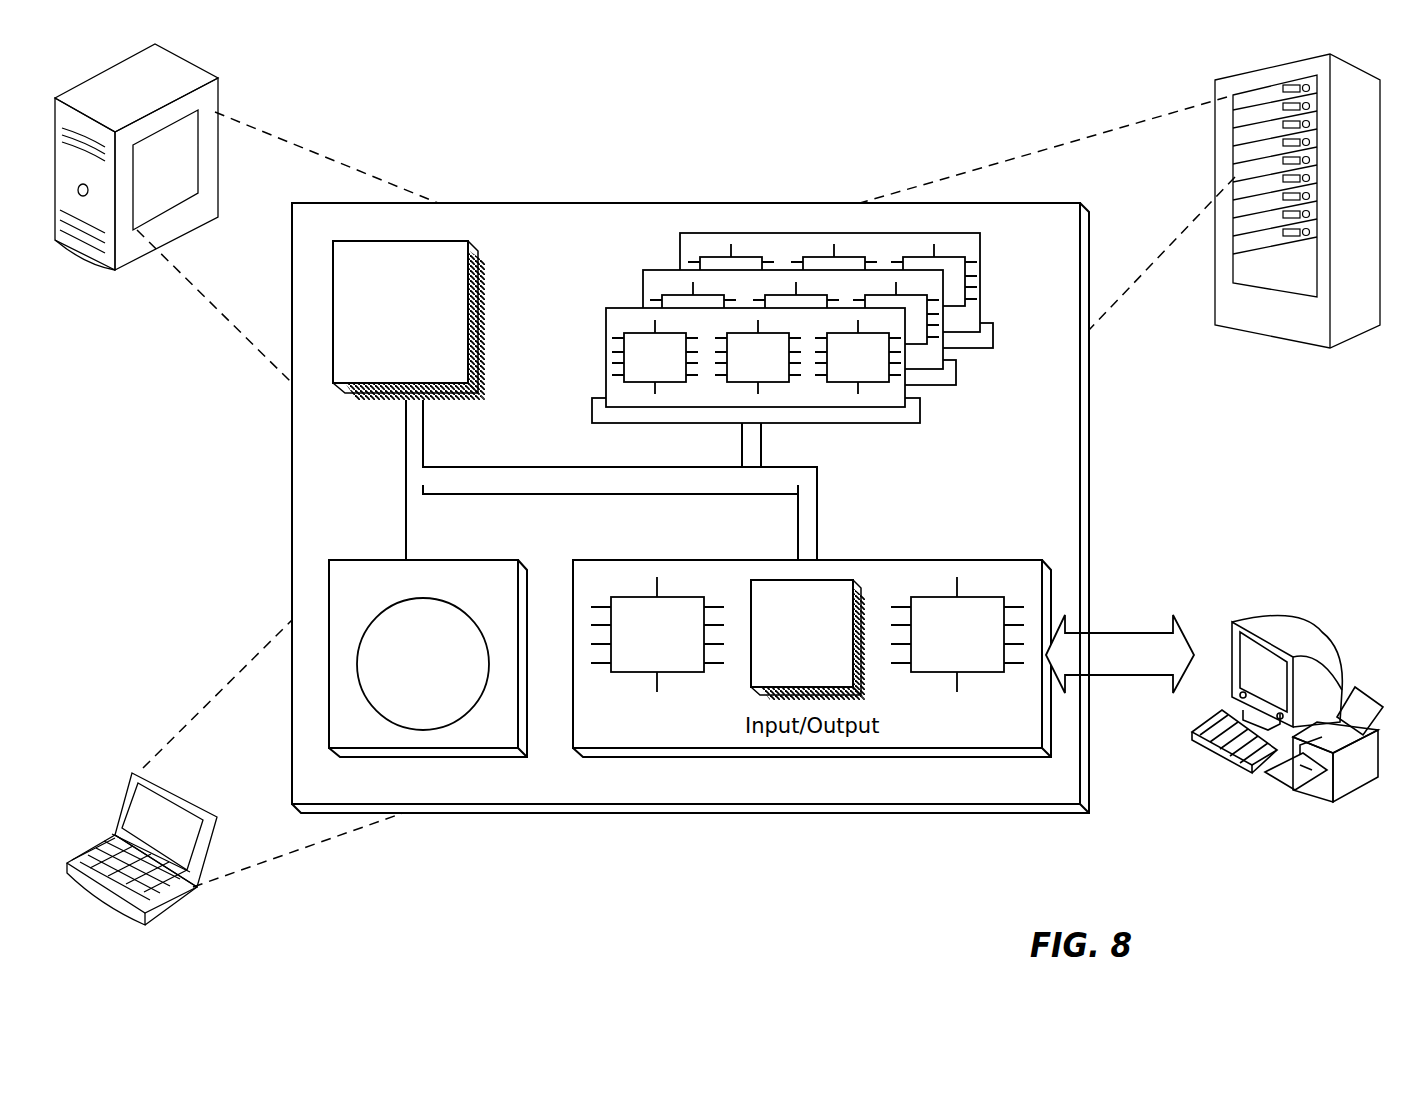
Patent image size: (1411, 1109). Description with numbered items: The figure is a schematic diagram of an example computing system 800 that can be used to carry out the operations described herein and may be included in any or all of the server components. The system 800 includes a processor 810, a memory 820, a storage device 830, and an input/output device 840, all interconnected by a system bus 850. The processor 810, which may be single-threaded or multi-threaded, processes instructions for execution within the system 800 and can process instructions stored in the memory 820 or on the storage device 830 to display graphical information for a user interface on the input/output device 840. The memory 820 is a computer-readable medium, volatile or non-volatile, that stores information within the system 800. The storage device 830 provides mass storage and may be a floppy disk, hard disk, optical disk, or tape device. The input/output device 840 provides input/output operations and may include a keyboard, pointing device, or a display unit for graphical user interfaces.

The computing system 800 is at (503, 118).
The processor 810 is at (409, 320).
The memory 820 is at (990, 387).
The storage device 830 is at (428, 658).
The input/output device 840 is at (1232, 630).
The system bus 850 is at (607, 485).